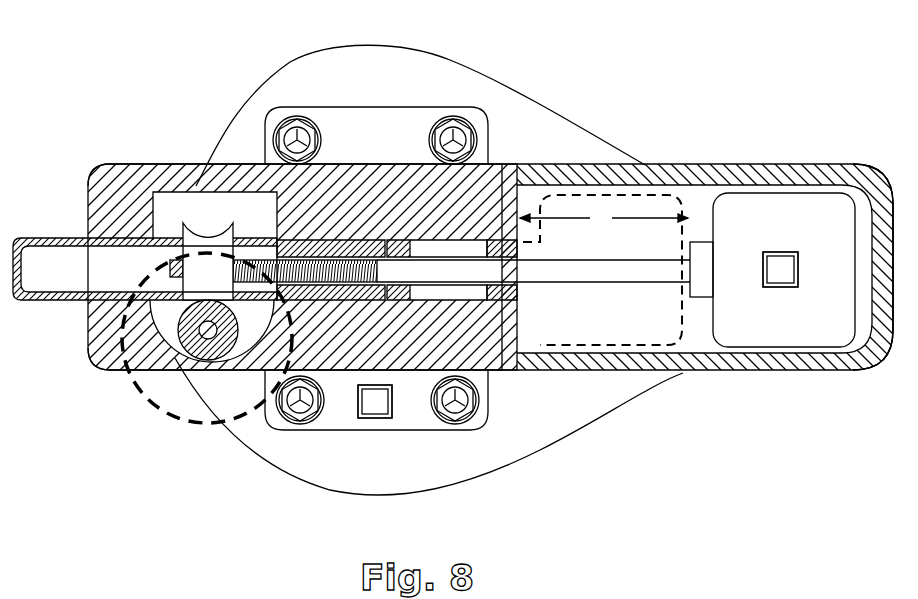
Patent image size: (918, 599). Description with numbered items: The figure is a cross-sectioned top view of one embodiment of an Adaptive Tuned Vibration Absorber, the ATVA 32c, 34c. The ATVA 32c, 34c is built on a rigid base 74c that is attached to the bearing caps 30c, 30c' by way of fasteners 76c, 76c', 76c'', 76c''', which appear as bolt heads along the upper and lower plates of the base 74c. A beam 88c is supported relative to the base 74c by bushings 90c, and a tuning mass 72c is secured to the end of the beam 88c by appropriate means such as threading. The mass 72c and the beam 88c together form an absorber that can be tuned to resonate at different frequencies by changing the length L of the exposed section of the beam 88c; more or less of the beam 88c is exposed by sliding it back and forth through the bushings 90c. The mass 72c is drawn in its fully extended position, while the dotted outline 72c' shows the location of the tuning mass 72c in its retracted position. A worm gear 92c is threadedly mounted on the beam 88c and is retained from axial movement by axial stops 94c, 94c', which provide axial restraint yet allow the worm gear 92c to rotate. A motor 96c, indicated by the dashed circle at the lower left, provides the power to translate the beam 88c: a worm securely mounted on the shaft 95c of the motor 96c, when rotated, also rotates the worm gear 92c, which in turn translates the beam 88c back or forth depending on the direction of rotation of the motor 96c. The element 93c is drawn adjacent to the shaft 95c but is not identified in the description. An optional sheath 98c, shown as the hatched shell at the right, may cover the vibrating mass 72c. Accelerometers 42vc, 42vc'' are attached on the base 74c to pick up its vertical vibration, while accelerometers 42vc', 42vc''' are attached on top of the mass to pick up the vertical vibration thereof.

The bearing cap 30c is at (490, 213).
The bearing cap 30c' is at (873, 267).
The adaptive tuned vibration absorber 32c is at (107, 166).
The adaptive tuned vibration absorber 34c is at (295, 267).
The accelerometer 42vc is at (429, 432).
The accelerometer 42vc'' is at (375, 401).
The accelerometer 42vc' is at (822, 199).
The accelerometer 42vc''' is at (780, 269).
The tuning mass 72c is at (784, 321).
The dotted outline of tuning mass 72c' is at (632, 223).
The rigid base 74c is at (370, 127).
The fastener 76c is at (493, 105).
The fastener 76c' is at (265, 104).
The fastener 76c'' is at (521, 434).
The fastener 76c''' is at (265, 441).
The beam 88c is at (684, 372).
The bushing 90c is at (517, 168).
The worm gear 92c is at (207, 228).
The roller 93c is at (183, 335).
The axial stop 94c is at (145, 237).
The axial stop 94c' is at (268, 178).
The shaft 95c is at (206, 333).
The motor 96c is at (135, 362).
The sheath 98c is at (808, 375).